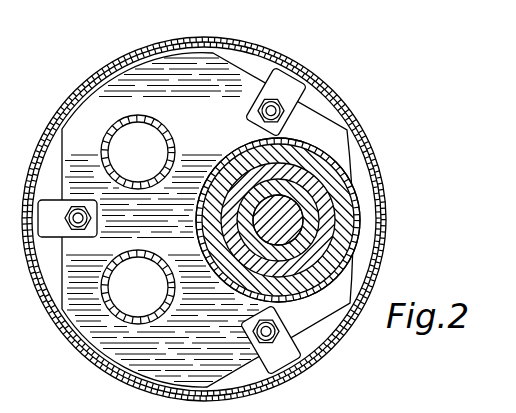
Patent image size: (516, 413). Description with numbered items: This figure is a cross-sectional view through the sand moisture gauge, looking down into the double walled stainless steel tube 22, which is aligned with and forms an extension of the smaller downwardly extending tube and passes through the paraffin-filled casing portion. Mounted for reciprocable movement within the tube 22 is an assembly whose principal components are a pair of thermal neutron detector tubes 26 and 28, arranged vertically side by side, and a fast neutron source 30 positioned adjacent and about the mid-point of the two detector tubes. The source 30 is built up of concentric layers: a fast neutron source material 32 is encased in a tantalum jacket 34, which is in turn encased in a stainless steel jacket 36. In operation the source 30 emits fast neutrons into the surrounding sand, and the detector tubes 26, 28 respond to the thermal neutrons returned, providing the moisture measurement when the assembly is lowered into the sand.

The double walled stainless steel tube 22 is at (388, 201).
The thermal neutron detector tube 26 is at (174, 294).
The thermal neutron detector tube 28 is at (174, 148).
The fast neutron source 30 is at (234, 237).
The fast neutron source material 32 is at (280, 198).
The tantalum jacket 34 is at (296, 252).
The stainless steel jacket 36 is at (253, 277).